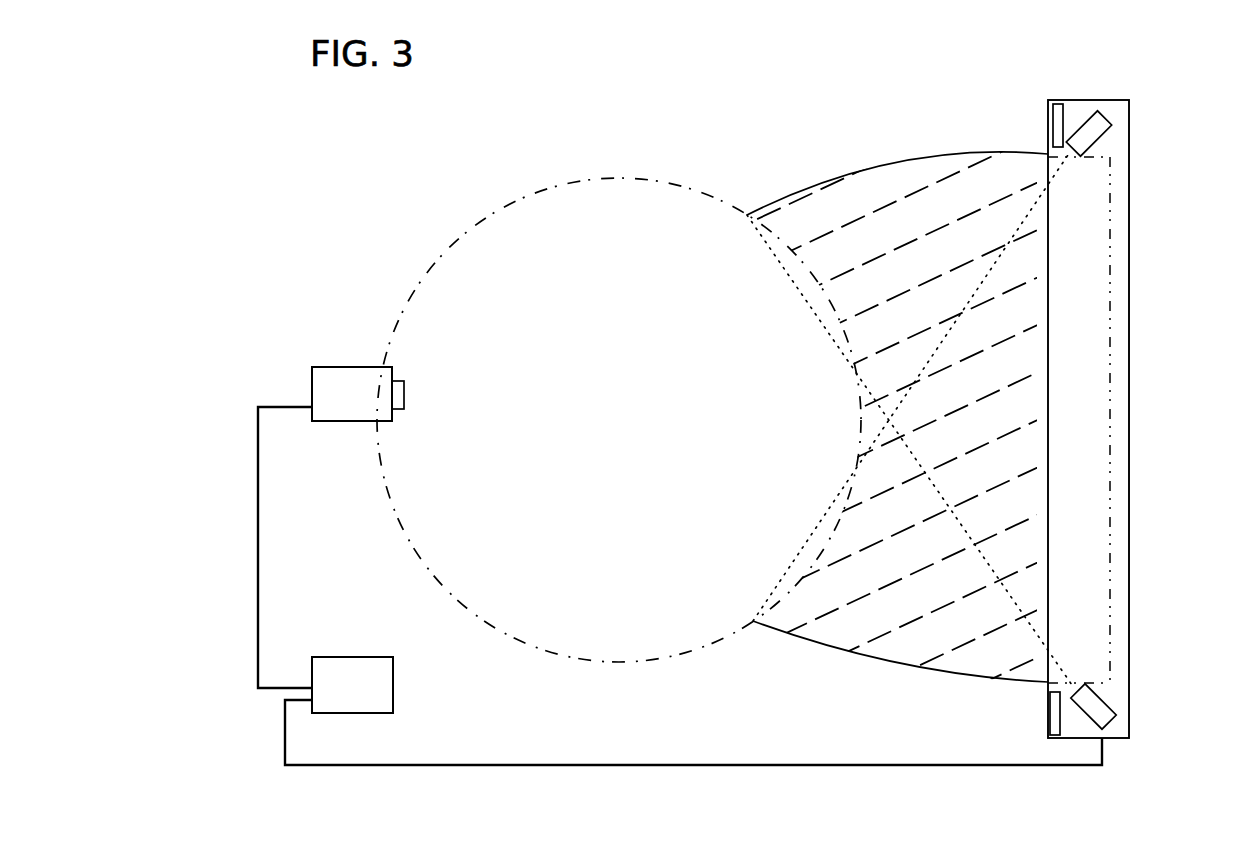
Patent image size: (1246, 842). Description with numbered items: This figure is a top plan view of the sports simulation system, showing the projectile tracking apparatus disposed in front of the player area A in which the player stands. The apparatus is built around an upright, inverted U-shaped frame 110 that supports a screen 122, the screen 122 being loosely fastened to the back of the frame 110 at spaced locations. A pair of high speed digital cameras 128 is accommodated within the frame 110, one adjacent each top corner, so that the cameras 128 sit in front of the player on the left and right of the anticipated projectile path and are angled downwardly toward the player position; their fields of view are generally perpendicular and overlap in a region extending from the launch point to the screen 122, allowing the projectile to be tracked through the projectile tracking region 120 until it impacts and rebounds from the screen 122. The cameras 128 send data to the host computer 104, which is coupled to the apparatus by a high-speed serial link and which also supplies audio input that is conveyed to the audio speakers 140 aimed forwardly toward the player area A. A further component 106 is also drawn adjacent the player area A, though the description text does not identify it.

The player area A is at (524, 193).
The host computer 104 is at (367, 688).
The light source 106 is at (337, 408).
The frame 110 is at (1026, 233).
The projectile tracking region 120 is at (940, 556).
The screen 122 is at (1105, 314).
The high speed digital camera 128 is at (1083, 131).
The audio speaker 140 is at (1050, 125).